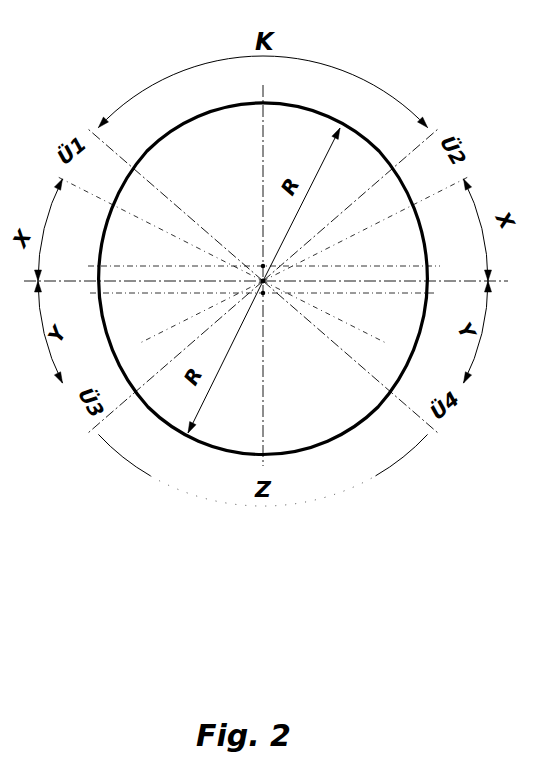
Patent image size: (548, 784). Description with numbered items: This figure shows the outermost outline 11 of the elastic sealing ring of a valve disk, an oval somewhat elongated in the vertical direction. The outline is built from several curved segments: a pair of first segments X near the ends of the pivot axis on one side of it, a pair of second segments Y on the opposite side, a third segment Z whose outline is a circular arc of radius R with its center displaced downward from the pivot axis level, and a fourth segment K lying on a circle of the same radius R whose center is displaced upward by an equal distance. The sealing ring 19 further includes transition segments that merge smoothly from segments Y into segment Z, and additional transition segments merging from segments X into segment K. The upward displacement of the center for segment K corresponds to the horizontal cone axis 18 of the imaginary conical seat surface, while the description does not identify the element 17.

The outermost outline 11 is at (372, 139).
The center point of side arcs 17 is at (264, 291).
The horizontal cone axis 18 is at (262, 266).
The sealing ring 19 is at (262, 296).